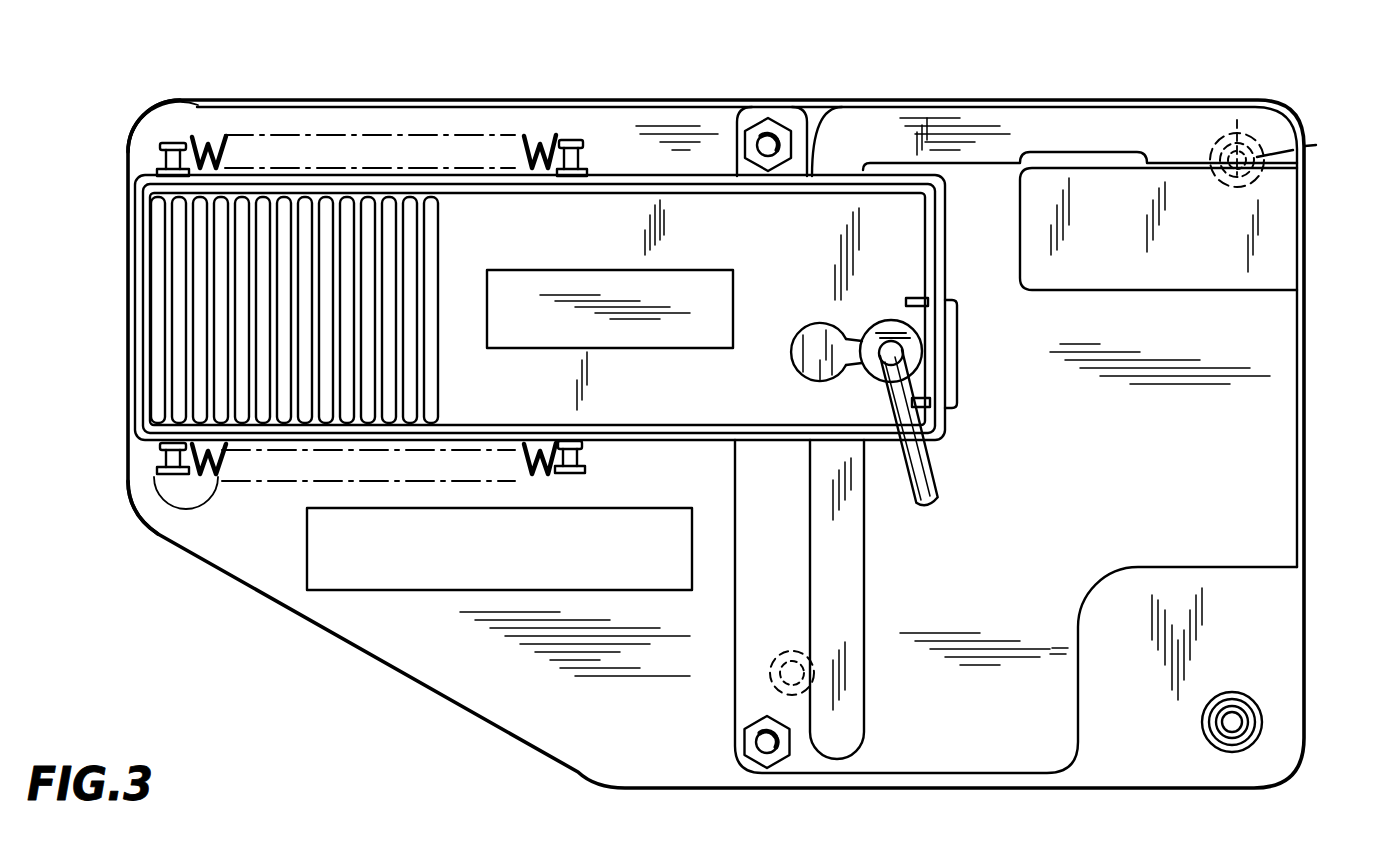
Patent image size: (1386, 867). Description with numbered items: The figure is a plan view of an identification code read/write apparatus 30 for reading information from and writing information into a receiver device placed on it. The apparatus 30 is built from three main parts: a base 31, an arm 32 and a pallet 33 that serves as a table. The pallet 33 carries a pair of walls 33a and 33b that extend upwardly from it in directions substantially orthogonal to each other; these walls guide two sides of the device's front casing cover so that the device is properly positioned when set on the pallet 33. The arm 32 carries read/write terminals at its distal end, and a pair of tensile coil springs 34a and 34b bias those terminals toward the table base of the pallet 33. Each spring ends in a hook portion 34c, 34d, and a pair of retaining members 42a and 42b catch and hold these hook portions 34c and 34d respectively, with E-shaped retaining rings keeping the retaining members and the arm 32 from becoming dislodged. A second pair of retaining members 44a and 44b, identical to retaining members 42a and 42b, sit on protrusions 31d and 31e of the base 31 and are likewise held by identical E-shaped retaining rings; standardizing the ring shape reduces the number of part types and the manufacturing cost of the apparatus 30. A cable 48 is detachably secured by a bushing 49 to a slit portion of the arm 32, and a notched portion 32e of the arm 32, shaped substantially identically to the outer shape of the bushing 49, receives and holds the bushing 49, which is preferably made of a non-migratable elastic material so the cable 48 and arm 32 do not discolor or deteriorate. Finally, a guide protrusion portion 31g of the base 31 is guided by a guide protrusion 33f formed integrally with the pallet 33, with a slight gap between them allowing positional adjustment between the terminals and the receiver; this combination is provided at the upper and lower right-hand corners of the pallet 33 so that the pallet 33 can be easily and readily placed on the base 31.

The apparatus 30 is at (1311, 249).
The base 31 is at (1288, 594).
The protrusion 31d is at (130, 168).
The protrusion 31e is at (130, 460).
The guide protrusion portion 31g is at (1238, 104).
The arm 32 is at (620, 210).
The notched portion 32e is at (826, 328).
The pallet 33 is at (1268, 357).
The wall 33a is at (925, 160).
The wall 33b is at (872, 712).
The guide protrusion 33f is at (1264, 798).
The tensile coil spring 34a is at (295, 140).
The tensile coil spring 34b is at (287, 482).
The hook portion 34c is at (196, 482).
The hook portion 34d is at (184, 140).
The retaining member 42a is at (572, 138).
The retaining member 42b is at (580, 480).
The retaining member 44a is at (171, 133).
The retaining member 44b is at (176, 492).
The cable 48 is at (940, 474).
The bushing 49 is at (897, 335).